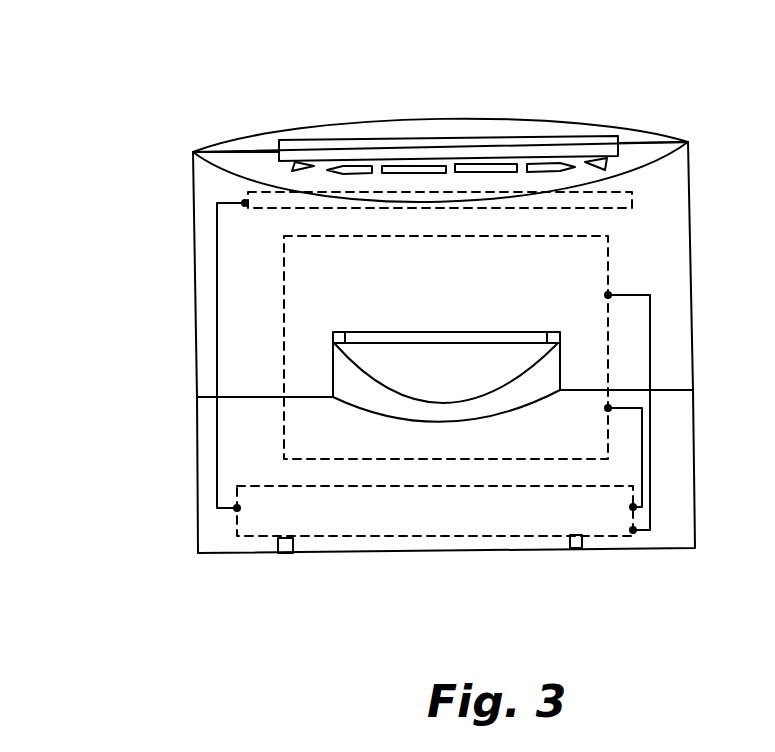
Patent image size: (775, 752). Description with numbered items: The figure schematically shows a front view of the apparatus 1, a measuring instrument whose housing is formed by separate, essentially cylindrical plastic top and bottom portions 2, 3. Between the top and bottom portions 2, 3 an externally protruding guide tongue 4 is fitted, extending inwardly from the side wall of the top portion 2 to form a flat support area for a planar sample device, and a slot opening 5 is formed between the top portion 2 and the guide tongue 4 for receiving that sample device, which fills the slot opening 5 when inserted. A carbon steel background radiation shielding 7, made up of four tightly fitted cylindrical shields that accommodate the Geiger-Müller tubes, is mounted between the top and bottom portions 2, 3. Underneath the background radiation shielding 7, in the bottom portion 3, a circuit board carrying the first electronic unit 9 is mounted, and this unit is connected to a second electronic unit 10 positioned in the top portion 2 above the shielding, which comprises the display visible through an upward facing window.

The apparatus 1 is at (632, 130).
The top portion 2 is at (206, 343).
The bottom portion 3 is at (207, 450).
The guide tongue 4 is at (527, 357).
The slot opening 5 is at (500, 333).
The background radiation shielding 7 is at (606, 250).
The first electronic unit 9 is at (518, 503).
The second electronic unit 10 is at (250, 195).